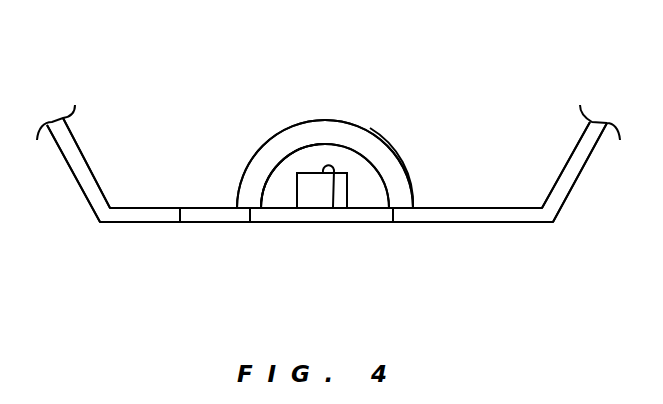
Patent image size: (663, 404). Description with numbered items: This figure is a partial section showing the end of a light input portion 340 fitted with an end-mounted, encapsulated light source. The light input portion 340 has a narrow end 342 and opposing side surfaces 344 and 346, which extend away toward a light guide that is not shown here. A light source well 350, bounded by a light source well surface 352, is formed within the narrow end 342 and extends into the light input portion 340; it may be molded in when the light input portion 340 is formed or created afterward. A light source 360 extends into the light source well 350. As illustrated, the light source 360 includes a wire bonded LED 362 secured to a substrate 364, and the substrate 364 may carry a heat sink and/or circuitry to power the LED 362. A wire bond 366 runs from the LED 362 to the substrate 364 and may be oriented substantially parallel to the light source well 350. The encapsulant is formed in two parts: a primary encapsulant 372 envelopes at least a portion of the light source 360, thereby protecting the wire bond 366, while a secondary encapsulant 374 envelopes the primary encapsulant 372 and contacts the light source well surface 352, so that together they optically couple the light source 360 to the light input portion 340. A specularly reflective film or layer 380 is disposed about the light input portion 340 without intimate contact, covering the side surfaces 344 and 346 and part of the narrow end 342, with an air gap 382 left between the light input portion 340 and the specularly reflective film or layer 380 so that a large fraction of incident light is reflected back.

The light input portion 340 is at (186, 83).
The narrow end 342 is at (457, 208).
The side surface 344 is at (572, 157).
The side surface 346 is at (85, 162).
The light source well 350 is at (358, 130).
The light source well surface 352 is at (383, 150).
The light source 360 is at (327, 104).
The LED 362 is at (317, 200).
The substrate 364 is at (262, 215).
The wire bond 366 is at (331, 188).
The primary encapsulant 372 is at (292, 130).
The secondary encapsulant 374 is at (278, 175).
The specularly reflective film or layer 380 is at (113, 223).
The air gap 382 is at (180, 216).